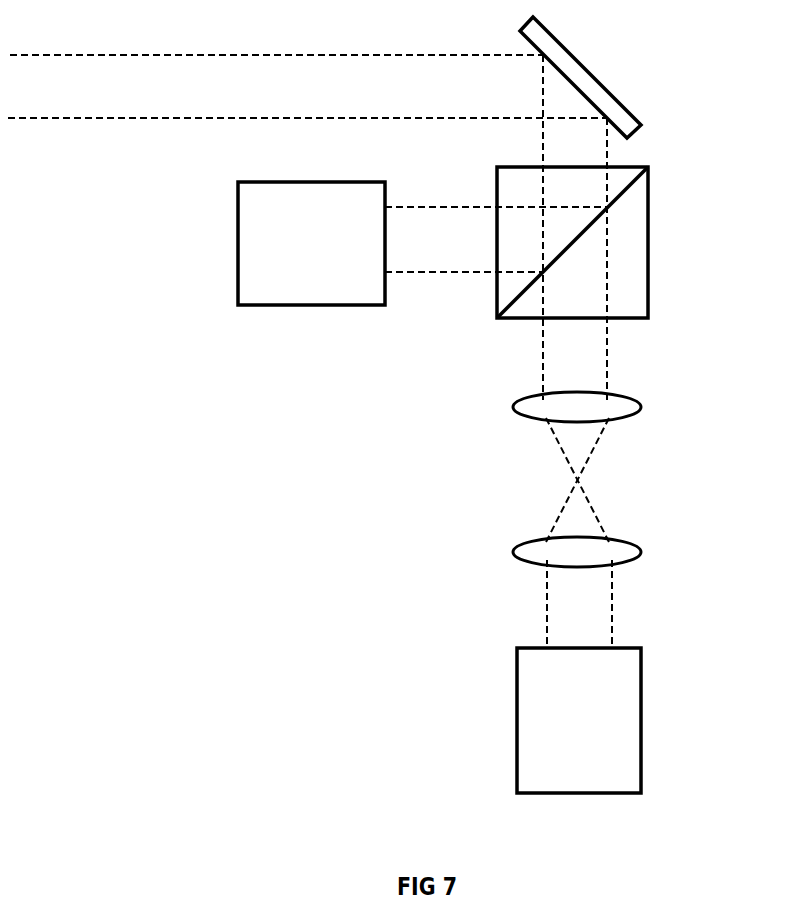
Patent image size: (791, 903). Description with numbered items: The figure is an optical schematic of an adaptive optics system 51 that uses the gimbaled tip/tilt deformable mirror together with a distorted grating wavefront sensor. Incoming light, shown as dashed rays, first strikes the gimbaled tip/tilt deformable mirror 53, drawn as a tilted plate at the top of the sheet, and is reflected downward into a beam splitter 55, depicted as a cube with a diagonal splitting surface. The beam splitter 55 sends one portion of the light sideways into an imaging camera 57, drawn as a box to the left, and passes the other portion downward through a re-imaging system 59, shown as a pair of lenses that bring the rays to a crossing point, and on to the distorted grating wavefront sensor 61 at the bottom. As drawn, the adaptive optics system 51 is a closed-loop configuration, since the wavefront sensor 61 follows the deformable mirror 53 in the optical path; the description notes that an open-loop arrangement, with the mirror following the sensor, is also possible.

The adaptive optics system 51 is at (377, 462).
The gimbaled tip/tilt deformable mirror 53 is at (583, 77).
The beam splitter 55 is at (627, 265).
The imaging camera 57 is at (275, 235).
The re-imaging system 59 is at (638, 392).
The distorted grating wavefront sensor 61 is at (557, 722).